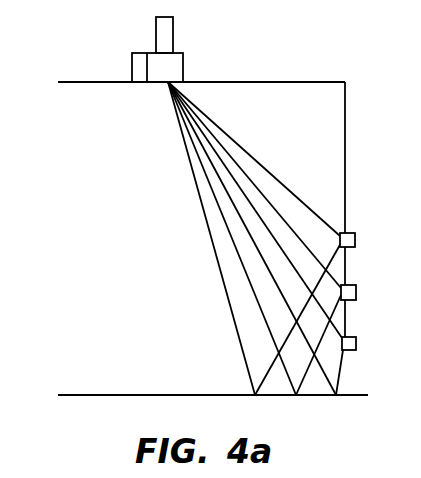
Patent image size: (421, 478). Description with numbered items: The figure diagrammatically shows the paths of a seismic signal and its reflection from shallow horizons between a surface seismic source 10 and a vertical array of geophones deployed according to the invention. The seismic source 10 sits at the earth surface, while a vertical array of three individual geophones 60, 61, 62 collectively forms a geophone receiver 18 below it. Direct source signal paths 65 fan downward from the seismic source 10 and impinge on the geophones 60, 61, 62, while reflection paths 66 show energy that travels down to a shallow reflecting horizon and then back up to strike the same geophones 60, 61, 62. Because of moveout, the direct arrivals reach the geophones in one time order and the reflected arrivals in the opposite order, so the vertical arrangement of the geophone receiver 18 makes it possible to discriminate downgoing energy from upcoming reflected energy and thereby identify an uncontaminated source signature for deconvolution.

The seismic source 10 is at (183, 27).
The geophone receiver 18 is at (287, 293).
The geophone 60 is at (349, 233).
The geophone 61 is at (341, 293).
The geophone 62 is at (362, 362).
The direct source signal paths 65 is at (228, 167).
The reflection paths 66 is at (270, 370).